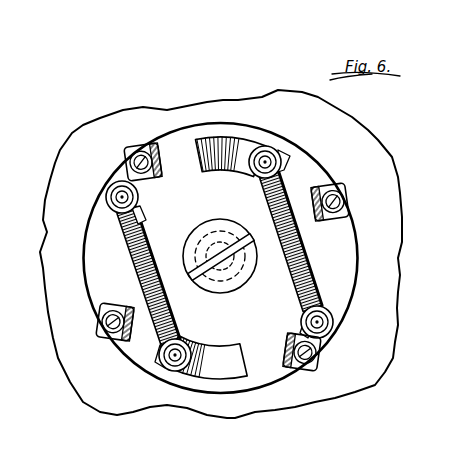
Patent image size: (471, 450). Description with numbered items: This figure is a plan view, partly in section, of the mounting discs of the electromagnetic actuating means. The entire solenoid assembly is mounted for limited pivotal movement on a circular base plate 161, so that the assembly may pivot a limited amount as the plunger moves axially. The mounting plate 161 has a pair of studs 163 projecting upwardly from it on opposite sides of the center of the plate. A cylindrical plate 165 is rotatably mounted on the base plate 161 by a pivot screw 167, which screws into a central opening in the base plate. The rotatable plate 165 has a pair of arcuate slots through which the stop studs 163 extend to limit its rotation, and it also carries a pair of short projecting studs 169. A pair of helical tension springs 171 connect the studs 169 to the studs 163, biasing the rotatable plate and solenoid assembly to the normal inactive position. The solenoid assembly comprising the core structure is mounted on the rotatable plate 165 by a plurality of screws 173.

The circular base plate 161 is at (222, 137).
The studs 163 is at (267, 147).
The cylindrical plate 165 is at (342, 256).
The pivot screw 167 is at (200, 237).
The short projecting studs 169 is at (115, 185).
The helical tension springs 171 is at (140, 275).
The screws 173 is at (347, 193).